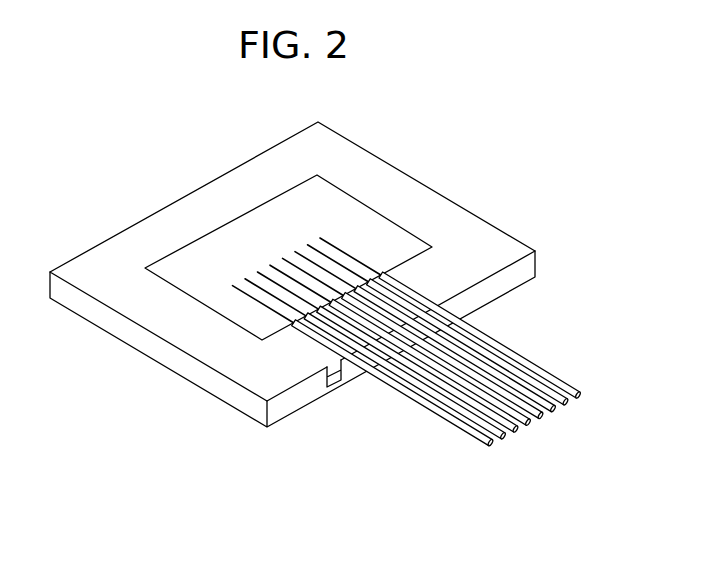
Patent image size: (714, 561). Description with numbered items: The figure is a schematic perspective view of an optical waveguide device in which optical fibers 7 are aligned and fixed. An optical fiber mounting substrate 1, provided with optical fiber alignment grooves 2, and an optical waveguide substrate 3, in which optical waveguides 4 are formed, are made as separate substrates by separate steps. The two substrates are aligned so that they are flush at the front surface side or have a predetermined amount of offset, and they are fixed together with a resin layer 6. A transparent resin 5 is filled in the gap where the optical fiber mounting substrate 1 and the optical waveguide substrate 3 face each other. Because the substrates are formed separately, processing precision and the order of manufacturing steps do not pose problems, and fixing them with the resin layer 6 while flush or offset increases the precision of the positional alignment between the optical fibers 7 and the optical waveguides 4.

The optical fiber mounting substrate 1 is at (341, 385).
The optical fiber alignment grooves 2 is at (436, 395).
The optical waveguide substrate 3 is at (192, 273).
The optical waveguides 4 is at (245, 300).
The transparent resin 5 is at (407, 270).
The resin layer 6 is at (373, 178).
The optical fibers 7 is at (452, 424).